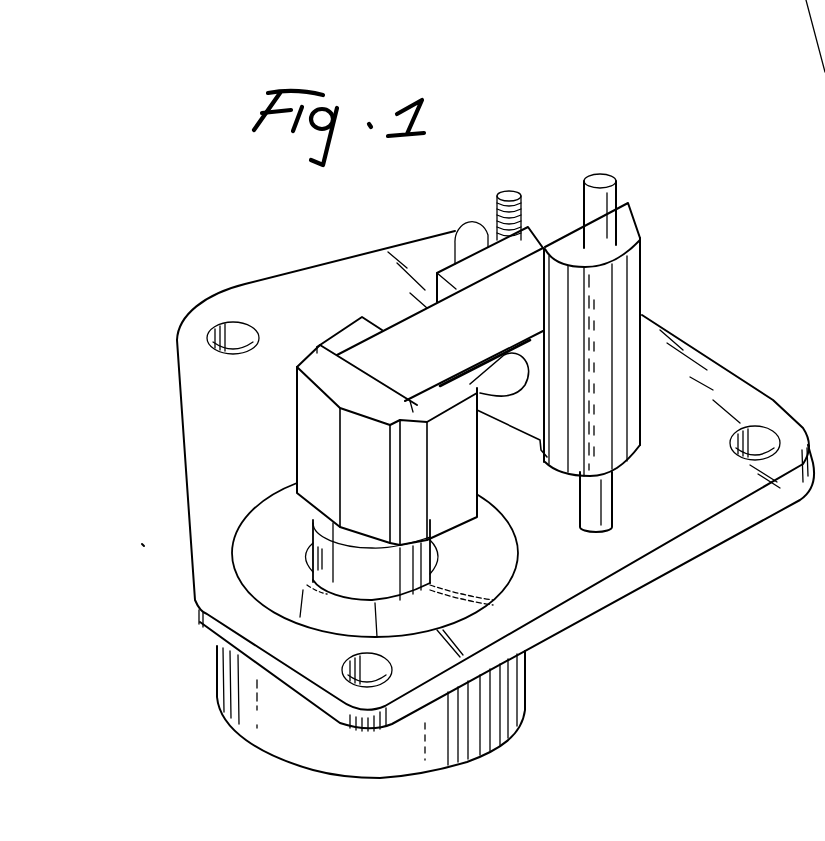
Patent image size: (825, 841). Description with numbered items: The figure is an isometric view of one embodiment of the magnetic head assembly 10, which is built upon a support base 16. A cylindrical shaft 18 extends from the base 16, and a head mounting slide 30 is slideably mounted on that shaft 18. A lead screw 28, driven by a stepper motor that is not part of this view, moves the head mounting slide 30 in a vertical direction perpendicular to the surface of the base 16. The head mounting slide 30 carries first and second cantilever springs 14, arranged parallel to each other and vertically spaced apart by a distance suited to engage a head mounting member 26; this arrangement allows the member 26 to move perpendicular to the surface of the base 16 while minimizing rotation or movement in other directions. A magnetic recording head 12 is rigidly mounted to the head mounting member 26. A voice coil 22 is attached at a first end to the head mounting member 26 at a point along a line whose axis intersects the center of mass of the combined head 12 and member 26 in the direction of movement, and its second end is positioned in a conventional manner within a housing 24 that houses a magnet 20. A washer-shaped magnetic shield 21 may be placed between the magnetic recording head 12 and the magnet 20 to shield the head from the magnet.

The magnetic head assembly 10 is at (728, 290).
The magnetic recording head 12 is at (300, 386).
The cantilever springs 14 is at (482, 336).
The support base 16 is at (733, 390).
The cylindrical shaft 18 is at (612, 503).
The magnet 20 is at (445, 613).
The magnetic shield 21 is at (493, 582).
The voice coil 22 is at (312, 560).
The housing 24 is at (514, 715).
The head mounting member 26 is at (357, 327).
The lead screw 28 is at (524, 207).
The head mounting slide 30 is at (637, 223).